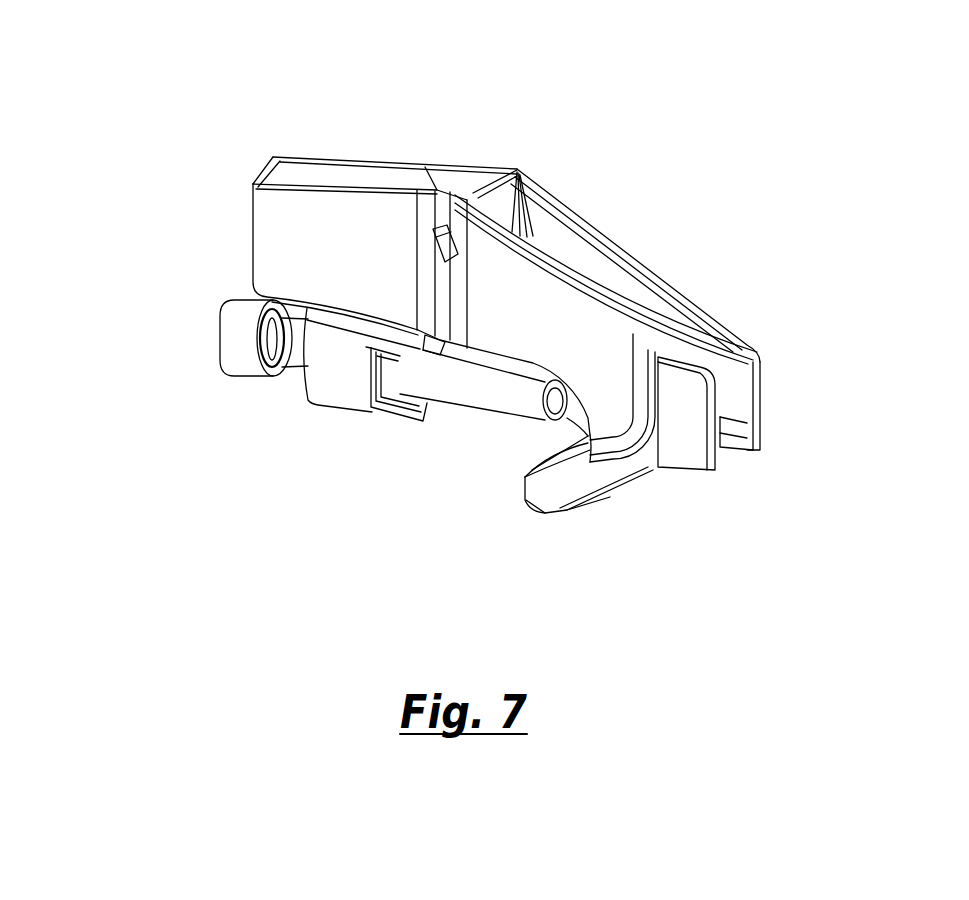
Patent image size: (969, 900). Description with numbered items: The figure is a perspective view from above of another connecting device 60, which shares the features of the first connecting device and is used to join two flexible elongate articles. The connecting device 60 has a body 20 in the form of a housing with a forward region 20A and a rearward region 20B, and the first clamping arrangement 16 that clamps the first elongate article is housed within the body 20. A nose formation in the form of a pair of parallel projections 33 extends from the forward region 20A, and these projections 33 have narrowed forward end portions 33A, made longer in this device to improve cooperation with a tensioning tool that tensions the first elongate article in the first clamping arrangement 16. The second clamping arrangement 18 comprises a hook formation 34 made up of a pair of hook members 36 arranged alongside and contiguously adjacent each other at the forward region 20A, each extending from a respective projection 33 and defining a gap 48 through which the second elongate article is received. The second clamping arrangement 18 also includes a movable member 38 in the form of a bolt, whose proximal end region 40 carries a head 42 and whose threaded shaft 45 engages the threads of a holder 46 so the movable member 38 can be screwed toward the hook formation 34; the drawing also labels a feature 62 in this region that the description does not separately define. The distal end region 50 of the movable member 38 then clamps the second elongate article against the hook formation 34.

The connecting device 60 is at (460, 317).
The body 20 is at (359, 227).
The forward region 20A is at (497, 163).
The rearward region 20B is at (267, 166).
The first clamping arrangement 16 is at (543, 197).
The projections 33 is at (567, 267).
The narrowed forward end portions 33A is at (758, 346).
The movable member 38 is at (185, 314).
The head 42 is at (220, 335).
The proximal end region 40 is at (235, 357).
The second clamping arrangement 18 is at (280, 427).
The threaded shaft 45 is at (325, 407).
The holder 46 is at (355, 403).
The slot opening 62 is at (367, 417).
The distal end region 50 is at (517, 400).
The gap 48 is at (567, 517).
The hook formation 34 is at (542, 500).
The hook members 36 is at (610, 497).